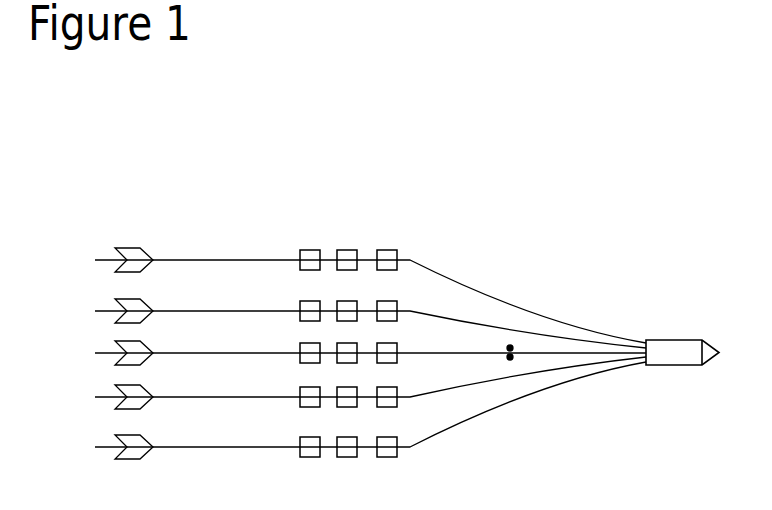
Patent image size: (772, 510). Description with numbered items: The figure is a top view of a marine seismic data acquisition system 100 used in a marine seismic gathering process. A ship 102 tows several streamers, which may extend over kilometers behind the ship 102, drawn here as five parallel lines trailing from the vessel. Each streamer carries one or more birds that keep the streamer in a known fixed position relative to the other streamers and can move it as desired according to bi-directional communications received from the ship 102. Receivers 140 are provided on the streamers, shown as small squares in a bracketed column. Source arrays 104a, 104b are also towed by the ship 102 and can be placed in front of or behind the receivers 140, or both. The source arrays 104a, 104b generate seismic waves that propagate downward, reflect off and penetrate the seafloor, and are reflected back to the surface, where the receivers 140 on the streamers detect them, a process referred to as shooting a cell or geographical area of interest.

The data acquisition system 100 is at (246, 168).
The ship 102 is at (680, 339).
The source array 104a is at (510, 354).
The source array 104b is at (510, 354).
The receiver 140 is at (400, 244).